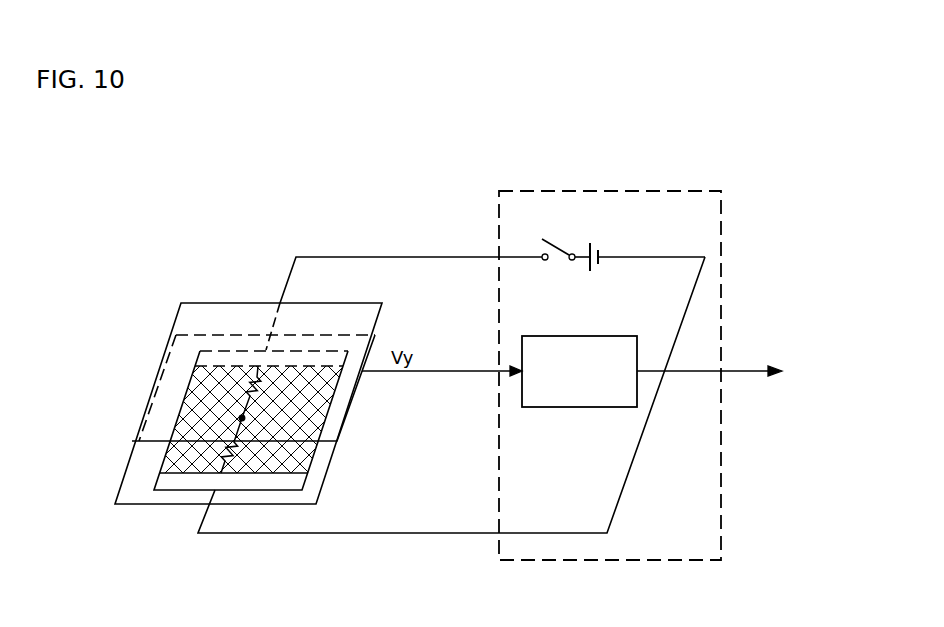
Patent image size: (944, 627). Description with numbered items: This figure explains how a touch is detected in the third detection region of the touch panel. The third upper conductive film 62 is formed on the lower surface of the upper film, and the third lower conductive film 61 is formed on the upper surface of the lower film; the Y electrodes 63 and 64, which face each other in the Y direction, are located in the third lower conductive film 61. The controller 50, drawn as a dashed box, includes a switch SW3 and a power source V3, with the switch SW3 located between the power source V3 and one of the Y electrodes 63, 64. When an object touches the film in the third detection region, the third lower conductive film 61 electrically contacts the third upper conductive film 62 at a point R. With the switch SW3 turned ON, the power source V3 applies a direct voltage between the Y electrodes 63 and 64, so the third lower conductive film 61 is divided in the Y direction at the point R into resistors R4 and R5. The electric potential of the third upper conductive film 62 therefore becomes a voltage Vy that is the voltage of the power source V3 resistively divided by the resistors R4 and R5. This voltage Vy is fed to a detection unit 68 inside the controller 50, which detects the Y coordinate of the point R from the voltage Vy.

The controller 50 is at (687, 191).
The third lower conductive film 61 is at (312, 460).
The third upper conductive film 62 is at (362, 310).
The Y electrode 63 is at (275, 490).
The Y electrode 64 is at (230, 350).
The detection unit 68 is at (628, 336).
The point R is at (245, 418).
The resistor R4 is at (264, 392).
The resistor R5 is at (240, 445).
The switch SW3 is at (547, 238).
The power source V3 is at (640, 244).